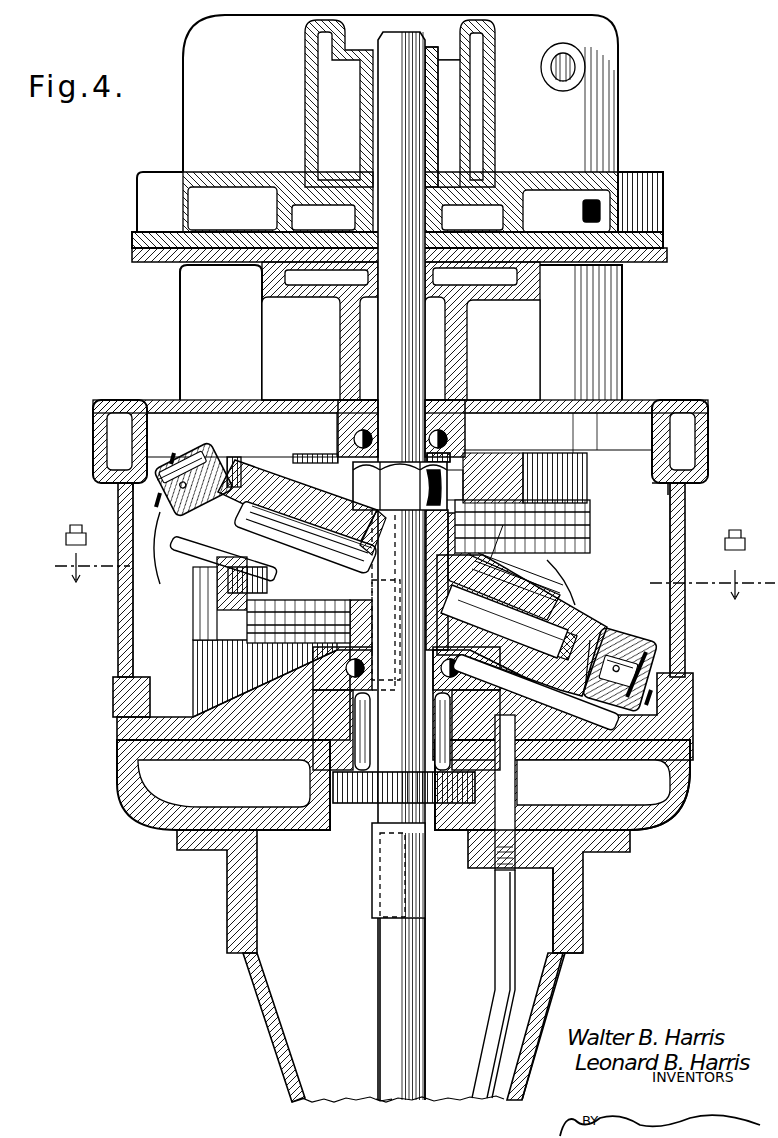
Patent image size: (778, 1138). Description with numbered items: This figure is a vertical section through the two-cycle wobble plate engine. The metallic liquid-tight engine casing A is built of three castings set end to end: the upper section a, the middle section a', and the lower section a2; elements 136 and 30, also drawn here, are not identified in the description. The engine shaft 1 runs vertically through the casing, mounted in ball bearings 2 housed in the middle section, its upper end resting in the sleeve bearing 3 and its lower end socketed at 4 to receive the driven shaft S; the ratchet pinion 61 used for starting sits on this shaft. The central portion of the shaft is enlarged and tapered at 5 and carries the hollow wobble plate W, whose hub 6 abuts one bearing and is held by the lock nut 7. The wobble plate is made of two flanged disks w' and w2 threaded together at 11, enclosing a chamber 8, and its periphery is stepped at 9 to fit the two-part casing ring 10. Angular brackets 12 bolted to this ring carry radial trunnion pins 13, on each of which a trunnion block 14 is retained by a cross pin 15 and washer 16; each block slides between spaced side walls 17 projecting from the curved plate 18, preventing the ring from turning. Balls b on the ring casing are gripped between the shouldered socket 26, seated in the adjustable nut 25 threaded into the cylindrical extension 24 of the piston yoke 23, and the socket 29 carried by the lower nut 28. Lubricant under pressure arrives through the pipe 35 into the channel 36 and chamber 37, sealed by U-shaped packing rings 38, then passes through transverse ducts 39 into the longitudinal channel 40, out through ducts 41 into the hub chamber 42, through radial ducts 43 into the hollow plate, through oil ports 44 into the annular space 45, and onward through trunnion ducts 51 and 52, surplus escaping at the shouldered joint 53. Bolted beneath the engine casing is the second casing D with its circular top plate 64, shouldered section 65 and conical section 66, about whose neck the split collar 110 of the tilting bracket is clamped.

The upper casing 136 is at (325, 98).
The sleeve bearing 3 is at (438, 95).
The upper section a is at (655, 202).
The engine shaft 1 is at (405, 360).
The engine casing A is at (400, 337).
The flange bolt hole 30 is at (115, 431).
The middle section a' is at (701, 466).
The curved plate 18 is at (118, 607).
The side walls 17 is at (160, 632).
The cross pin 15 is at (125, 487).
The nut 28 is at (255, 680).
The duct 52 is at (168, 445).
The channel 36 is at (515, 779).
The lower section a2 is at (663, 800).
The shouldered section 65 is at (583, 880).
The split collar 110 is at (583, 915).
The circular top plate 64 is at (198, 850).
The second casing D is at (257, 1005).
The conical section 66 is at (548, 1015).
The pipe 35 is at (495, 913).
The driven shaft S is at (380, 974).
The socket 4 is at (380, 886).
The ratchet pinion 61 is at (358, 792).
The ball bearings 2 is at (465, 437).
The hub 6 is at (360, 636).
The shouldered socket 26 is at (316, 460).
The chamber 42 is at (458, 540).
The enlarged tapered section 5 is at (375, 530).
The lock nut 7 is at (450, 490).
The transverse oil ducts 41 is at (388, 595).
The longitudinal oil channel 40 is at (395, 630).
The transverse ducts 39 is at (400, 720).
The chamber 37 is at (355, 722).
The packing rings 38 is at (340, 704).
The casing ring 10 is at (270, 470).
The oil ports 44 is at (240, 457).
The angular brackets 12 is at (185, 545).
The shouldered periphery 9 is at (278, 512).
The threads 11 is at (255, 506).
The disk w2 is at (292, 512).
The disk w' is at (305, 537).
The radial ducts 43 is at (345, 556).
The chamber 8 is at (510, 620).
The trunnion pins 13 is at (160, 470).
The annular space 45 is at (185, 486).
The trunnion block 14 is at (160, 520).
The washer 16 is at (148, 445).
The duct 51 is at (583, 692).
The ball b is at (245, 572).
The yoke 23 is at (217, 600).
The socket 29 is at (215, 620).
The shouldered joint 53 is at (290, 606).
The cylindrical extension 24 is at (545, 470).
The adjustable nut 25 is at (575, 548).
The wobble plate W is at (500, 534).